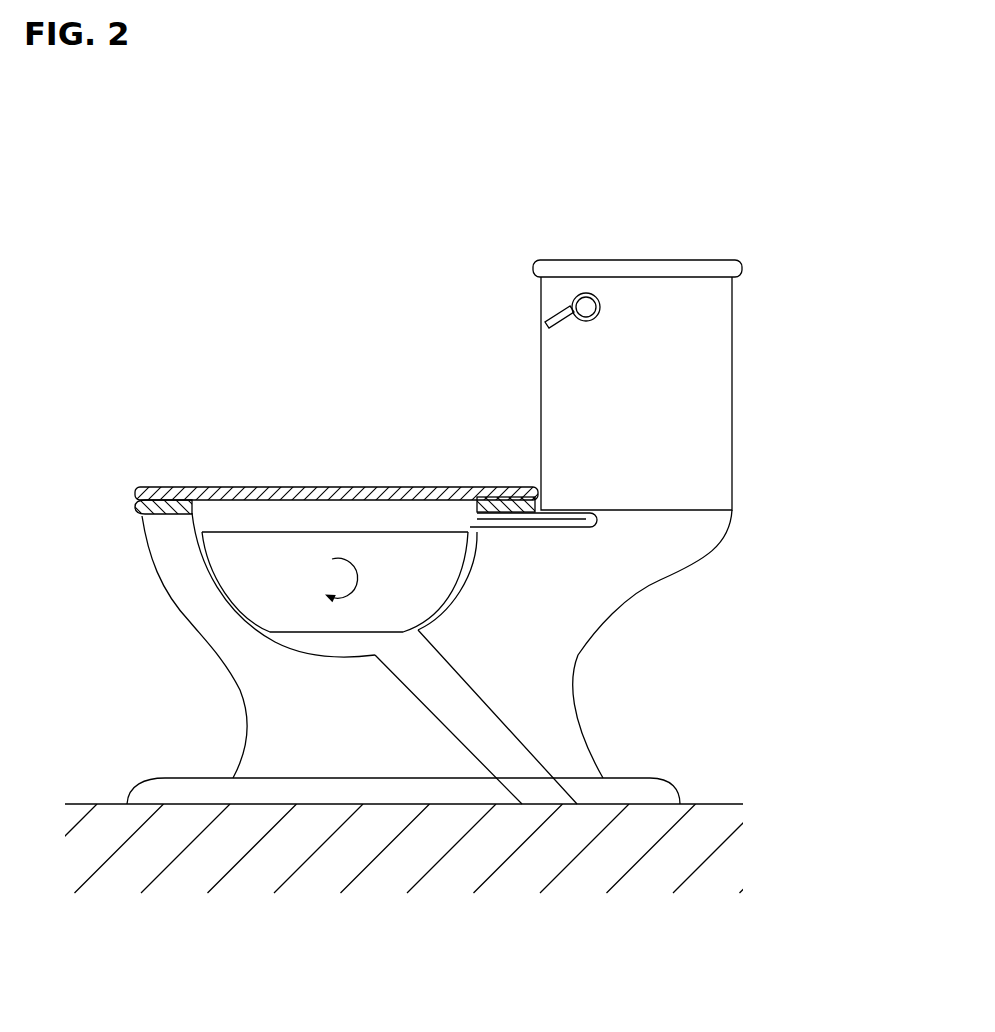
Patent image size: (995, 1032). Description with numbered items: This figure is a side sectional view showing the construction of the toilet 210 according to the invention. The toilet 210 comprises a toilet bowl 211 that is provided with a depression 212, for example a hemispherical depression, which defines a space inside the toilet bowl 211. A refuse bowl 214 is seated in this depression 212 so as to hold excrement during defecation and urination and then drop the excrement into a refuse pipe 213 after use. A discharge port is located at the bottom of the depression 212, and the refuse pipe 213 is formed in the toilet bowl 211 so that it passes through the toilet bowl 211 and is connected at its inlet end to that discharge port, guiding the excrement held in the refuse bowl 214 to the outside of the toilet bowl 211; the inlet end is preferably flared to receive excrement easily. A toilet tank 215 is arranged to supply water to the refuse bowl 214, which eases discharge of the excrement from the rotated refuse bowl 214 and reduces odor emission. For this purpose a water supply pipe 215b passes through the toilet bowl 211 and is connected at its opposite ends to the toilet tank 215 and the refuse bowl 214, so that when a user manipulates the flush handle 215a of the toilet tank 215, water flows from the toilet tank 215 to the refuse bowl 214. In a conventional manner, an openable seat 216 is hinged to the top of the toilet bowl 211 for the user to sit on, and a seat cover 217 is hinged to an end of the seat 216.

The toilet 210 is at (303, 244).
The toilet bowl 211 is at (173, 588).
The depression 212 is at (268, 635).
The refuse pipe 213 is at (470, 720).
The refuse bowl 214 is at (378, 553).
The toilet tank 215 is at (710, 418).
The flush handle 215a is at (557, 316).
The water supply pipe 215b is at (575, 522).
The seat 216 is at (139, 515).
The seat cover 217 is at (225, 487).